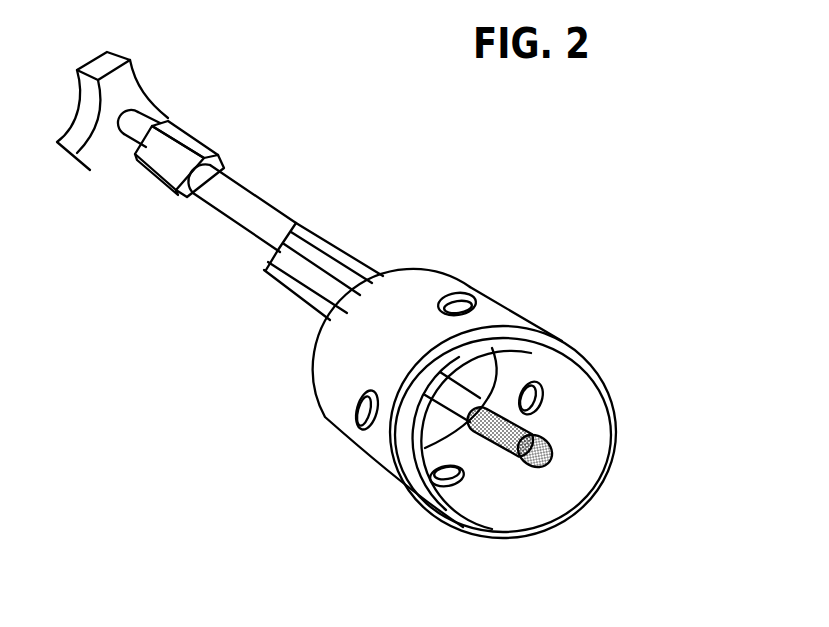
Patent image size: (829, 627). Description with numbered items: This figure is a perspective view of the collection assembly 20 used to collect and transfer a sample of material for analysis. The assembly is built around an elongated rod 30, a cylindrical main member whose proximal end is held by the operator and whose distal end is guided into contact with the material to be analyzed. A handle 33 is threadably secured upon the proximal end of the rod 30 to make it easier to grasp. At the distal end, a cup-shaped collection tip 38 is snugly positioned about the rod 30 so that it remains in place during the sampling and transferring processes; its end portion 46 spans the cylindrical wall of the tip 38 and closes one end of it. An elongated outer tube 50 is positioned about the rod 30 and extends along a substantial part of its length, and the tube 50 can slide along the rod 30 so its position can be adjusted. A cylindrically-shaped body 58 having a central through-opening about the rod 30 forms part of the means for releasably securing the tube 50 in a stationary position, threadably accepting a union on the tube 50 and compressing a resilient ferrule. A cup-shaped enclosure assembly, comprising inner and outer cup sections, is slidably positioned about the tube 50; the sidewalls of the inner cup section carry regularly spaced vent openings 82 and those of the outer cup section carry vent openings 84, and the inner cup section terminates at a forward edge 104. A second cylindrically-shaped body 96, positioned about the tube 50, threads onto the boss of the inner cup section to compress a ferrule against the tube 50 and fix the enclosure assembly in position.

The collection assembly 20 is at (437, 323).
The elongated rod 30 is at (130, 128).
The handle 33 is at (120, 58).
The collection tip 38 is at (510, 453).
The end portion 46 is at (549, 459).
The outer tube 50 is at (243, 199).
The cylindrically-shaped body 58 is at (197, 130).
The vent openings 82 is at (473, 299).
The vent openings 84 is at (459, 296).
The cylindrically-shaped body 96 is at (350, 248).
The forward edge 104 is at (607, 431).